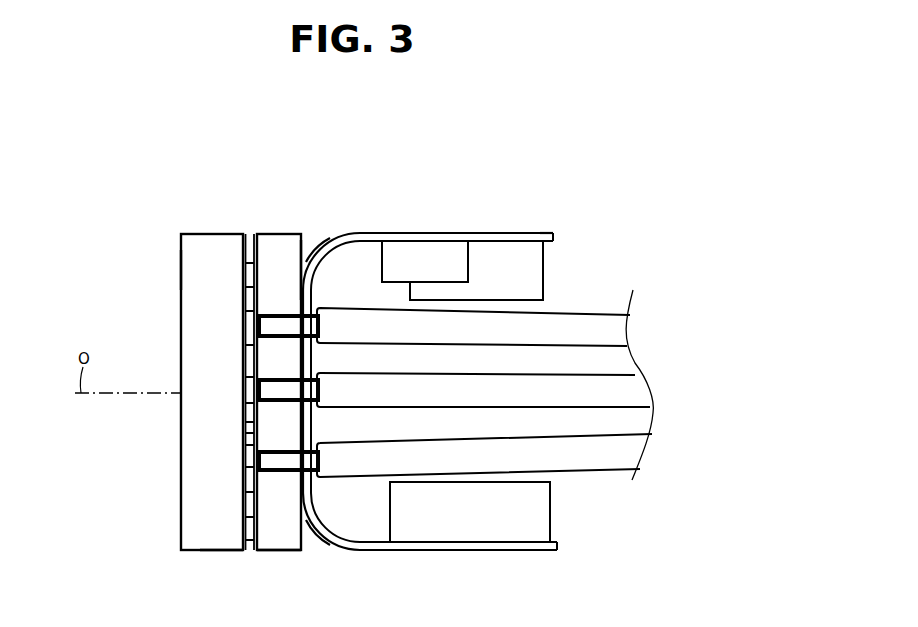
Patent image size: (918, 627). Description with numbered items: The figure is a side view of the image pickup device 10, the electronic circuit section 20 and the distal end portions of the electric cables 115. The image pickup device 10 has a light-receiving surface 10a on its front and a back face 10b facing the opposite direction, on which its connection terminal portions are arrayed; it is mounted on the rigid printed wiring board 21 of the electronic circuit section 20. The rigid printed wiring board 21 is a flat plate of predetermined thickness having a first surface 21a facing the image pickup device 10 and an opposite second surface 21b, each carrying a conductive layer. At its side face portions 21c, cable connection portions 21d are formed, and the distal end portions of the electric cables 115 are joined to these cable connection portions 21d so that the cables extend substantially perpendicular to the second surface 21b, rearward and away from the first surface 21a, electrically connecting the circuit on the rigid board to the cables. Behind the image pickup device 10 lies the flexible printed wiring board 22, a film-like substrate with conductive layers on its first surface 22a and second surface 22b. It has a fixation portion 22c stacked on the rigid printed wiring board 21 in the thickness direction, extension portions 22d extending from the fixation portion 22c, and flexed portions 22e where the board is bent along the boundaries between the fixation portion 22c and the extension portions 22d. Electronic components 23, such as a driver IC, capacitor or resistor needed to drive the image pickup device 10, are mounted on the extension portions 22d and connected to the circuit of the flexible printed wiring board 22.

The image pickup device 10 is at (195, 233).
The light-receiving surface 10a is at (181, 268).
The back face 10b is at (257, 548).
The electronic circuit section 20 is at (318, 140).
The rigid printed wiring board 21 is at (265, 233).
The first surface 21a is at (245, 251).
The second surface 21b is at (302, 250).
The side face portion 21c is at (277, 490).
The cable connection portion 21d is at (273, 407).
The flexible printed wiring board 22 is at (370, 232).
The first surface 22a is at (551, 232).
The second surface 22b is at (551, 244).
The fixation portion 22c is at (313, 428).
The extension portion 22d is at (472, 232).
The flexed portion 22e is at (323, 247).
The electronic component 23 is at (468, 260).
The electric cable 115 is at (620, 330).